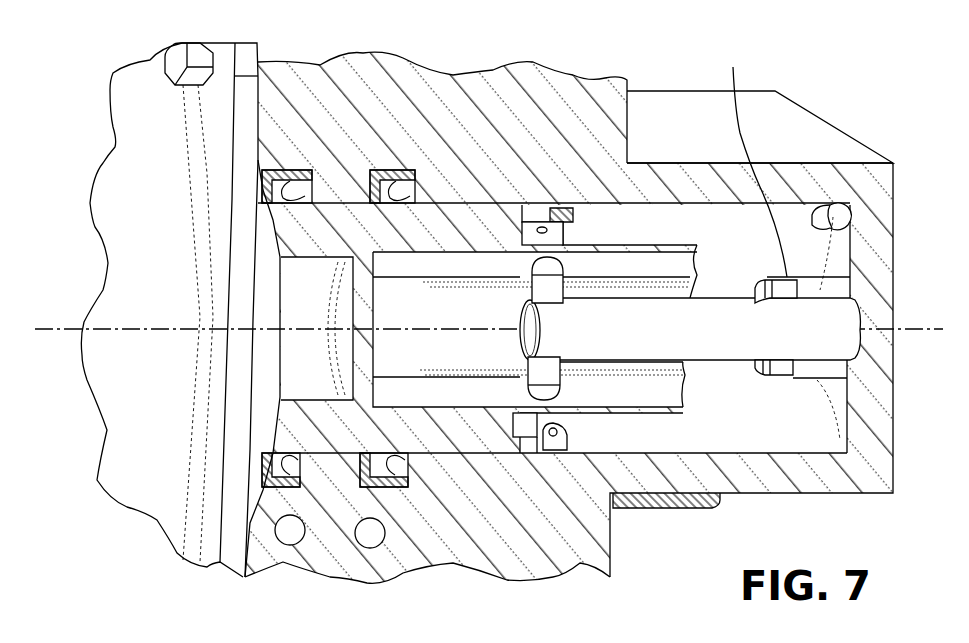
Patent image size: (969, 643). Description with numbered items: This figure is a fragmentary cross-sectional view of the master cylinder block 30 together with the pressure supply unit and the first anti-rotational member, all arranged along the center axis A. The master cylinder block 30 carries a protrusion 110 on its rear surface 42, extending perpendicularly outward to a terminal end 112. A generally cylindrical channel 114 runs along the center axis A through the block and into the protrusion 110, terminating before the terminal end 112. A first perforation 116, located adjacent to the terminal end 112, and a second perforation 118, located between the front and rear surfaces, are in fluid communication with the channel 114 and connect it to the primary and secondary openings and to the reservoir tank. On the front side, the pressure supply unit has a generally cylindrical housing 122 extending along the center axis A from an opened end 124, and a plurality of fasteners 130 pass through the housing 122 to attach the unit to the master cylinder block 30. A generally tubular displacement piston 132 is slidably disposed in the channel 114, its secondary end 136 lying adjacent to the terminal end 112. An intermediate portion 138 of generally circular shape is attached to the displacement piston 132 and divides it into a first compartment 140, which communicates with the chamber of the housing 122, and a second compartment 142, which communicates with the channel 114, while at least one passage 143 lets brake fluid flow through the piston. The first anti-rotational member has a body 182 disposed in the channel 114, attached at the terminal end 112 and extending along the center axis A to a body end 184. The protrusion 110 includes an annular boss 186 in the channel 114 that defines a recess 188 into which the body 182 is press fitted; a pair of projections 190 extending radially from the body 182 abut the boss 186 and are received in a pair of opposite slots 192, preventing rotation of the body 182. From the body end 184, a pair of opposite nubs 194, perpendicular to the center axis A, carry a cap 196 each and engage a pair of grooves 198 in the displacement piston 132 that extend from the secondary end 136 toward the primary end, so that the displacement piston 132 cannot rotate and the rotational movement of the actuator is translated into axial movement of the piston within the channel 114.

The master cylinder block 30 is at (617, 74).
The rear surface 42 is at (627, 102).
The protrusion 110 is at (770, 110).
The terminal end 112 is at (897, 187).
The channel 114 is at (778, 440).
The first perforation 116 is at (853, 230).
The second perforation 118 is at (340, 210).
The housing 122 is at (143, 118).
The opened end 124 is at (247, 53).
The fasteners 130 is at (197, 50).
The displacement piston 132 is at (453, 213).
The secondary end 136 is at (523, 447).
The intermediate portion 138 is at (345, 350).
The first compartment 140 is at (340, 440).
The second compartment 142 is at (443, 363).
The passage 143 is at (560, 427).
The body 182 is at (714, 348).
The body end 184 is at (520, 315).
The boss 186 is at (815, 215).
The recess 188 is at (850, 343).
The projections 190 is at (827, 380).
The slots 192 is at (752, 159).
The nubs 194 is at (540, 285).
The cap 196 is at (550, 260).
The grooves 198 is at (677, 393).
The center axis A is at (935, 326).